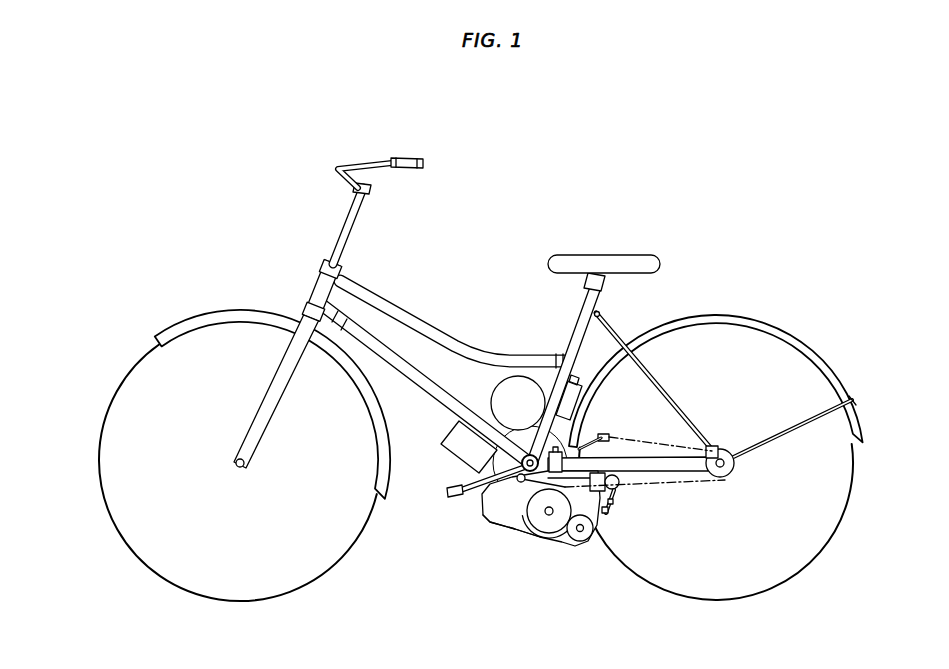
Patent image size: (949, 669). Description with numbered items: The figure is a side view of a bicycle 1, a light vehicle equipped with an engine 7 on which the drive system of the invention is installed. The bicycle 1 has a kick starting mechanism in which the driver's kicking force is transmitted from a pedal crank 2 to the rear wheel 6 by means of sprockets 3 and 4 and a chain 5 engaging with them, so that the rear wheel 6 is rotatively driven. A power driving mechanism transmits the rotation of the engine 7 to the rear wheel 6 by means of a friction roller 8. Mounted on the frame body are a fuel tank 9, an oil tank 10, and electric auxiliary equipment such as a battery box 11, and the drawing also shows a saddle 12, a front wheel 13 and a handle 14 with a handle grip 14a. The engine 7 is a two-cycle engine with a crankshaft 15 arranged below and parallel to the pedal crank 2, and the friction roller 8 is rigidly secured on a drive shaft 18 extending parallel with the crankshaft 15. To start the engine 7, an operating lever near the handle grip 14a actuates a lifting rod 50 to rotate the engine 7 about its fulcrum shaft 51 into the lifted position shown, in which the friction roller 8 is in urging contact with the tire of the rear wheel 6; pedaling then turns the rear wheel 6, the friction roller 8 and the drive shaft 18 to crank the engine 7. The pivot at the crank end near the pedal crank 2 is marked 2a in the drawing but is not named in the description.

The bicycle 1 is at (491, 323).
The pedal crank 2 is at (455, 496).
The crank pivot 2a is at (516, 486).
The sprocket 3 is at (516, 492).
The sprocket 4 is at (727, 480).
The chain 5 is at (672, 486).
The rear wheel 6 is at (836, 513).
The engine 7 is at (559, 540).
The friction roller 8 is at (580, 531).
The fuel tank 9 is at (493, 398).
The oil tank 10 is at (581, 403).
The battery box 11 is at (457, 447).
The saddle 12 is at (661, 265).
The front wheel 13 is at (315, 560).
The handle 14 is at (338, 170).
The handle grip 14a is at (410, 170).
The crankshaft 15 is at (549, 516).
The drive shaft 18 is at (591, 533).
The lifting rod 50 is at (610, 507).
The fulcrum shaft 51 is at (510, 503).